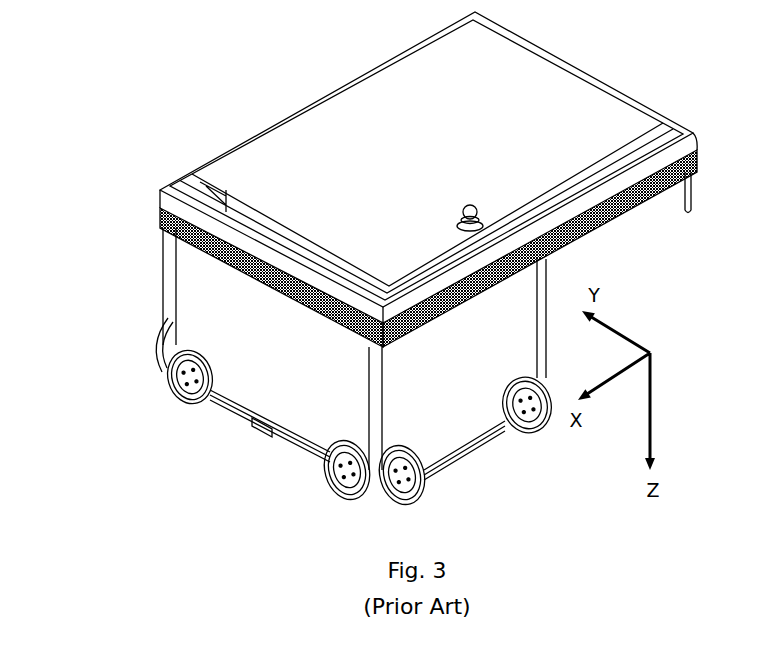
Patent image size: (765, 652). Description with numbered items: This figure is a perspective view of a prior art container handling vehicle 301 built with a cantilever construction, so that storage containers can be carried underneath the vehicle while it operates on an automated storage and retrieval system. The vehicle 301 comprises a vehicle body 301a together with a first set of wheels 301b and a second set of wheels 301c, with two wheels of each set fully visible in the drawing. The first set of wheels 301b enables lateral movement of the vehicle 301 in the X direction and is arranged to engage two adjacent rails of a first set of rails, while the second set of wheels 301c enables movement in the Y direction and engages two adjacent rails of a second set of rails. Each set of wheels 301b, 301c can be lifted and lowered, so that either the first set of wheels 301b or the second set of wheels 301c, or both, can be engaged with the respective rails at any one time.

The container handling vehicle 301 is at (368, 279).
The vehicle body 301a is at (158, 205).
The first set of wheels 301b is at (500, 463).
The second set of wheels 301c is at (212, 444).